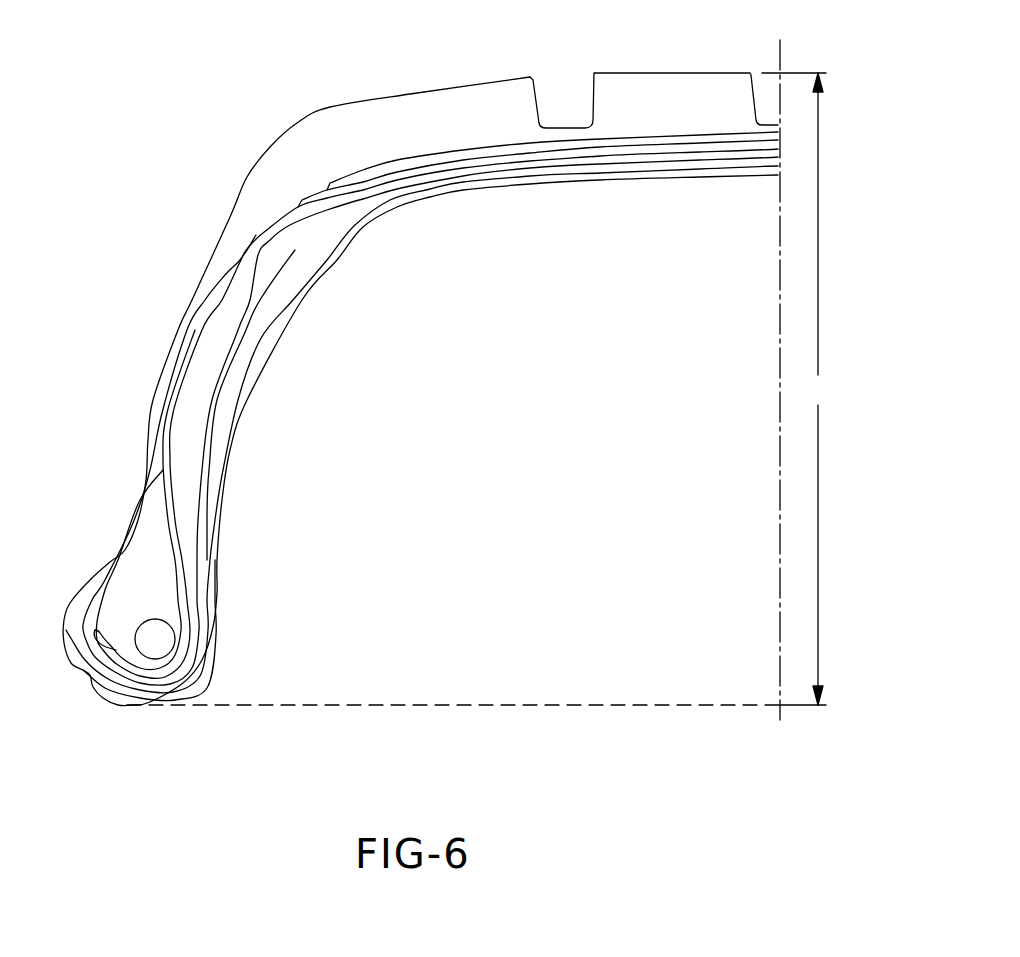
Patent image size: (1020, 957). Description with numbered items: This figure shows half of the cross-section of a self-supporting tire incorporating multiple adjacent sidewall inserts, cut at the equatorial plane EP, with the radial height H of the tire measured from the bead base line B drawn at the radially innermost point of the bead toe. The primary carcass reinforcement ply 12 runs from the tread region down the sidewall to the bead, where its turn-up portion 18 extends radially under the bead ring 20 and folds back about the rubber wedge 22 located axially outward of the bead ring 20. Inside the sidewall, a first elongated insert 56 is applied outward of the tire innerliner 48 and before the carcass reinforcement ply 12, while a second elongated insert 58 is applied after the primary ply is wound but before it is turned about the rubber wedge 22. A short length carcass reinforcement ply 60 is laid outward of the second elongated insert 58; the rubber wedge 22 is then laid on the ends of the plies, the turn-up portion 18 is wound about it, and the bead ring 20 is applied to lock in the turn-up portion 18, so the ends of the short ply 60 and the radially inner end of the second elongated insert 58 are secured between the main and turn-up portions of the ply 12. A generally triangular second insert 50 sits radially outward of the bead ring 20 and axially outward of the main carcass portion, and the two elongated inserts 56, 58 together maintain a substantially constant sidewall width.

The carcass reinforcement ply 12 is at (247, 318).
The turn-up portion 18 is at (95, 630).
The bead ring 20 is at (160, 630).
The rubber wedge 22 is at (95, 632).
The tire innerliner 48 is at (325, 262).
The second insert 50 is at (155, 545).
The first elongated insert 56 is at (248, 352).
The second elongated insert 58 is at (190, 412).
The short length carcass reinforcement ply 60 is at (183, 375).
The bead base line B is at (455, 705).
The radial height of the tire H is at (794, 389).
The equatorial plane EP is at (778, 363).